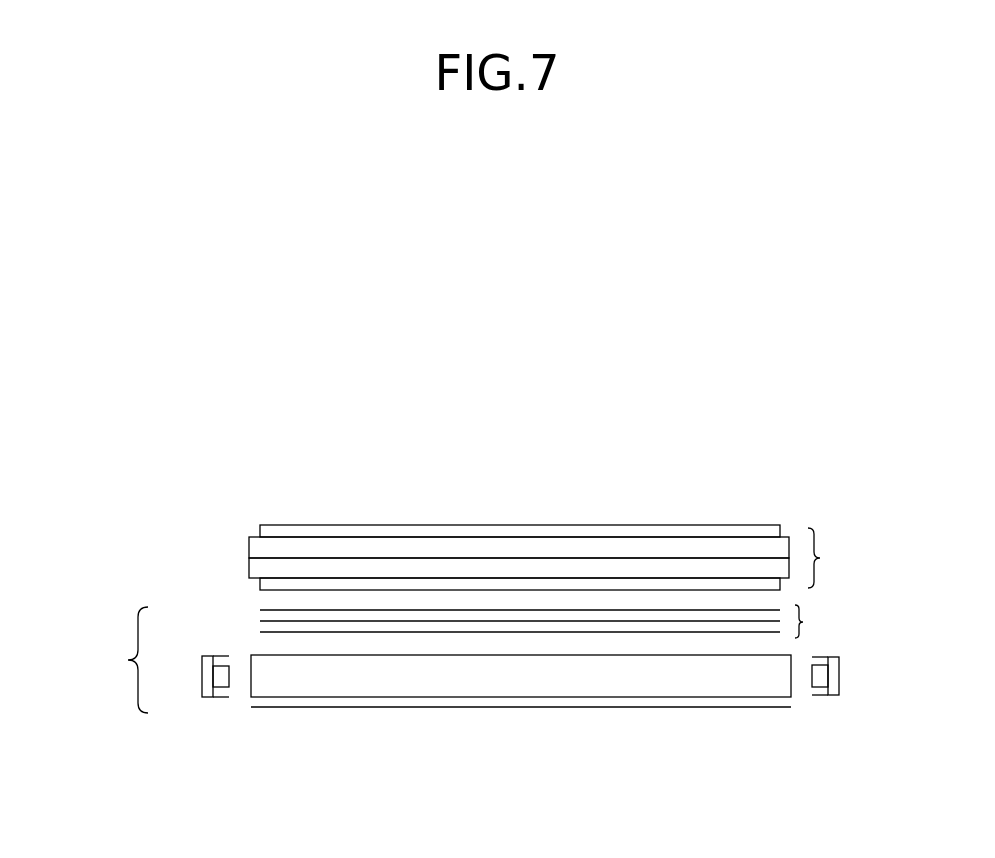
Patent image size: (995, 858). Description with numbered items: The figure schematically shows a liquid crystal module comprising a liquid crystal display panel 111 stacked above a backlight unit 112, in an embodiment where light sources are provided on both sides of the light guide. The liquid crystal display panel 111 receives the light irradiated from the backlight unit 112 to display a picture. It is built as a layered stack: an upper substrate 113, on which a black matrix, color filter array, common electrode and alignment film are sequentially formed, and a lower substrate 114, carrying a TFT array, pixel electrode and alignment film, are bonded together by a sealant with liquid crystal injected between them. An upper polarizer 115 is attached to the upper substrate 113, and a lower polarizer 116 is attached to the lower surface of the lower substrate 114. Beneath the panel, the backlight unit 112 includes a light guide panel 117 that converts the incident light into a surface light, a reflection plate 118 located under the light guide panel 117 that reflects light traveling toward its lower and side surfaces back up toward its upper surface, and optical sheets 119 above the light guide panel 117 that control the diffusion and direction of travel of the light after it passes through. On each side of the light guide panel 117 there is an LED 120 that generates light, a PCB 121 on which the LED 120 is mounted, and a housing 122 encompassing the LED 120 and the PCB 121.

The liquid crystal display panel 111 is at (838, 558).
The backlight unit 112 is at (110, 660).
The upper substrate 113 is at (488, 548).
The lower substrate 114 is at (568, 568).
The upper polarizer 115 is at (425, 532).
The lower polarizer 116 is at (623, 583).
The light guide panel 117 is at (347, 675).
The reflection plate 118 is at (537, 707).
The optical sheets 119 is at (556, 621).
The LED 120 is at (220, 677).
The PCB 121 is at (203, 682).
The housing 122 is at (210, 655).